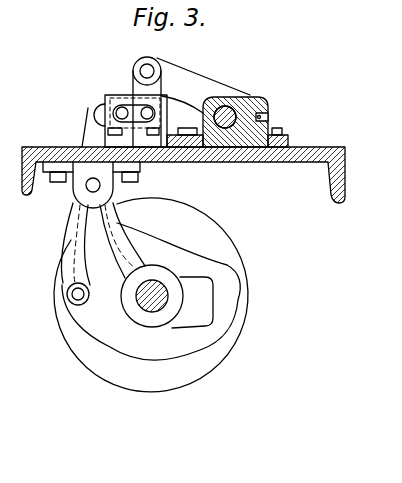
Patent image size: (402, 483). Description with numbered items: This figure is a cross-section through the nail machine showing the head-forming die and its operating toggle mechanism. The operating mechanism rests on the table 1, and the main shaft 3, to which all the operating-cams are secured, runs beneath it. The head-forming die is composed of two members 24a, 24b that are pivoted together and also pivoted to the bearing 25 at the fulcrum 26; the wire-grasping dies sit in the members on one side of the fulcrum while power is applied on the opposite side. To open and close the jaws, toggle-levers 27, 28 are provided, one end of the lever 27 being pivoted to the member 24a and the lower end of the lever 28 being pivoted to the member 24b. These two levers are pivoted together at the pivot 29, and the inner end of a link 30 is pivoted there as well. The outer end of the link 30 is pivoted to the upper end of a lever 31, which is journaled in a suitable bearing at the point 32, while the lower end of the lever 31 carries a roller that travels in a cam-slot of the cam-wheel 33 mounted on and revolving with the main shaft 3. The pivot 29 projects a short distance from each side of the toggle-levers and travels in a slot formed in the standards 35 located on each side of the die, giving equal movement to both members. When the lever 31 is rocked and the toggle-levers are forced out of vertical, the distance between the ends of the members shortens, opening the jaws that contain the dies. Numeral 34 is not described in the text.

The table 1 is at (313, 163).
The main shaft 3 is at (168, 300).
The member of the head-forming dies 24a is at (208, 90).
The member of the head-forming dies 24b is at (213, 161).
The bearing 25 is at (252, 102).
The fulcrum 26 is at (227, 108).
The toggle-lever 27 is at (134, 86).
The toggle-lever 28 is at (145, 152).
The pivot 29 is at (120, 120).
The link 30 is at (105, 101).
The lever 31 is at (70, 256).
The bearing point 32 is at (86, 188).
The cam-wheel 33 is at (140, 389).
The hook 34 is at (100, 120).
The standards 35 is at (95, 113).